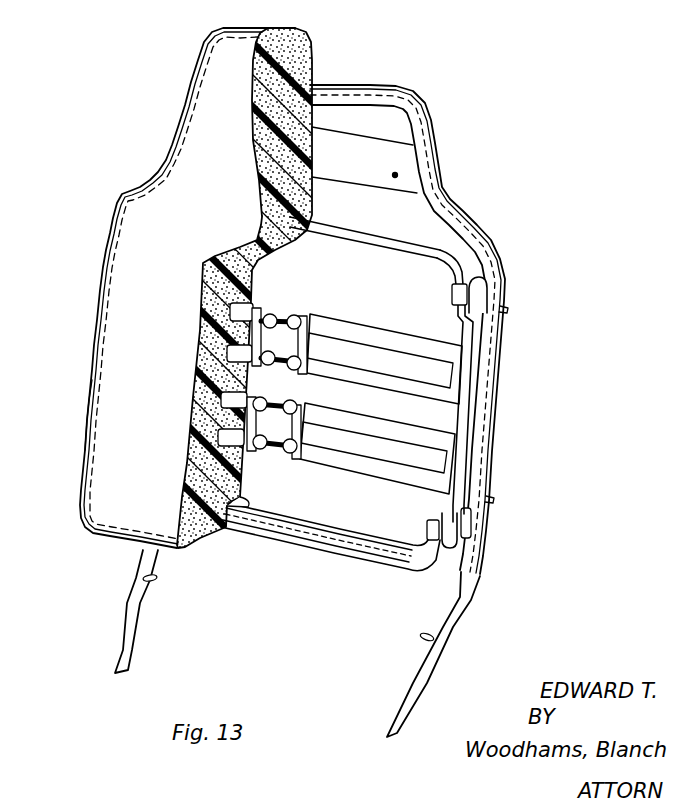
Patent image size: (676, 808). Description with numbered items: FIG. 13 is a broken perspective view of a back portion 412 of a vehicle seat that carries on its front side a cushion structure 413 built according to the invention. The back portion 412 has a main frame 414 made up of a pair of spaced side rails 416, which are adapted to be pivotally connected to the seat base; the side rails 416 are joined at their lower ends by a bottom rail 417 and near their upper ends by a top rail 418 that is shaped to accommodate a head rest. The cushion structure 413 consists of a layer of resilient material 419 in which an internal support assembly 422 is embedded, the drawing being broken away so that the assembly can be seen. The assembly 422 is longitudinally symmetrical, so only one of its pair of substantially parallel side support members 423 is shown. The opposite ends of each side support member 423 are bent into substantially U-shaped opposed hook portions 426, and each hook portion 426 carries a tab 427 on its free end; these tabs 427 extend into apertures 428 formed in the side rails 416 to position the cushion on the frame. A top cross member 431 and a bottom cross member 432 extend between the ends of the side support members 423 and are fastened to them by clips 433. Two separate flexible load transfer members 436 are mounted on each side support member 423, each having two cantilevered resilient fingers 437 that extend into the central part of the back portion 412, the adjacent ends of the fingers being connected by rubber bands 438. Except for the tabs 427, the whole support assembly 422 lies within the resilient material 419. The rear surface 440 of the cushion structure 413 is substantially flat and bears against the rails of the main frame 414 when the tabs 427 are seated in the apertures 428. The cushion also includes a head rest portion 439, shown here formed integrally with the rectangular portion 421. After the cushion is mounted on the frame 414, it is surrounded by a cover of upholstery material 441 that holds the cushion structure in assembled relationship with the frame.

The back portion 412 is at (543, 405).
The cushion structure 413 is at (100, 262).
The main frame 414 is at (485, 227).
The side rails 416 is at (487, 342).
The bottom rail 417 is at (297, 520).
The top rail 418 is at (418, 118).
The layer of resilient material 419 is at (289, 58).
The rectangular portion 421 is at (97, 466).
The internal support assembly 422 is at (432, 240).
The side support members 423 is at (458, 423).
The hook portions 426 is at (488, 293).
The tab 427 is at (505, 310).
The apertures 428 is at (481, 518).
The top cross member 431 is at (382, 208).
The bottom cross member 432 is at (337, 550).
The clips 433 is at (452, 294).
The flexible load transfer members 436 is at (387, 319).
The cantilevered resilient fingers 437 is at (407, 432).
The rubber bands 438 is at (281, 314).
The head rest portion 439 is at (205, 83).
The rear surface 440 is at (241, 508).
The cover of upholstery material 441 is at (130, 369).